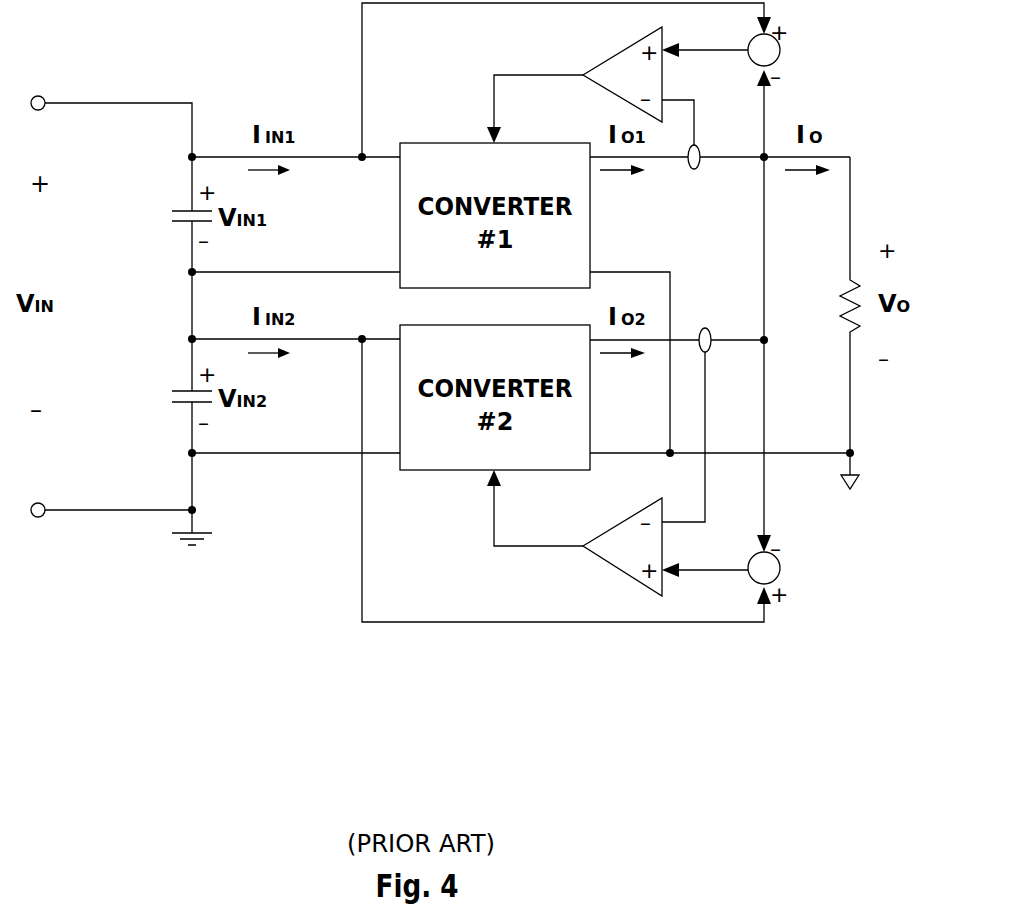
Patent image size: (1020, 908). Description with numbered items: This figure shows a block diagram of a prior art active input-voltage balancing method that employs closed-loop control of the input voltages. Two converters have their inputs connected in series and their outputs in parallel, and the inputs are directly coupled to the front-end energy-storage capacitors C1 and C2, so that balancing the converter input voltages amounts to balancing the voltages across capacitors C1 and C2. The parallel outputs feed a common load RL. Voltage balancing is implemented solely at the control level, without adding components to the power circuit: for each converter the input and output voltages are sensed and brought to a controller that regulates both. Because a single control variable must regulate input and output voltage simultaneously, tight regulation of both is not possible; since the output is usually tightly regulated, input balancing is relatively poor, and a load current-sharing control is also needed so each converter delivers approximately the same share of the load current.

The capacitor C1 is at (171, 218).
The capacitor C2 is at (171, 399).
The load resistor RL is at (830, 323).